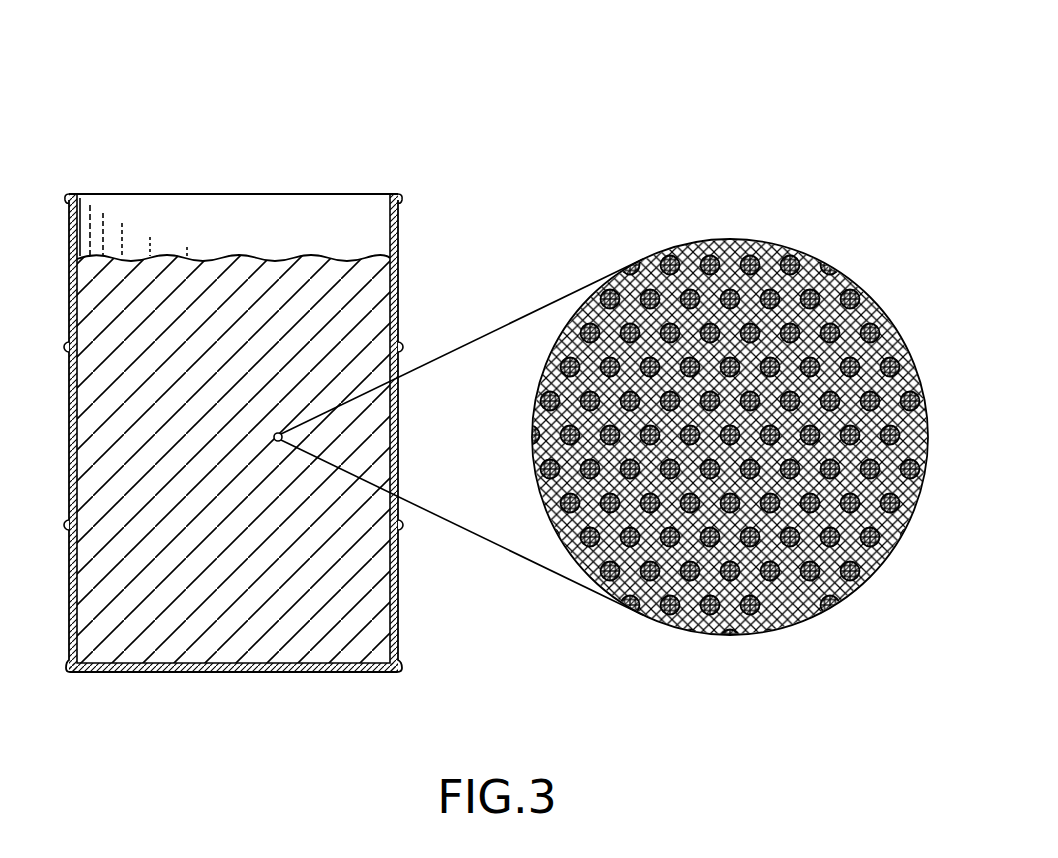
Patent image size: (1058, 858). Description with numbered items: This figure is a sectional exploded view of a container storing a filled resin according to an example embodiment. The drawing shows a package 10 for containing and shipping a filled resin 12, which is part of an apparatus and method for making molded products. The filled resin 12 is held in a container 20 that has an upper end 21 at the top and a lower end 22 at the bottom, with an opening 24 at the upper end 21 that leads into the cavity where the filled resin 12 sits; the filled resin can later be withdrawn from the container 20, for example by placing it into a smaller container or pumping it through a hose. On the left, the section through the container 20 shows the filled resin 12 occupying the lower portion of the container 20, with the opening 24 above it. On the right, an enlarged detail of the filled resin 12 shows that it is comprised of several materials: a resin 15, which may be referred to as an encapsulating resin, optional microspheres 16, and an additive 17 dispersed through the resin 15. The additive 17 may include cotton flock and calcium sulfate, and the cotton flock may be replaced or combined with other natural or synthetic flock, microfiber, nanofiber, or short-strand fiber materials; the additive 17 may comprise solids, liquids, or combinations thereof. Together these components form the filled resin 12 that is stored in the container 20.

The package 10 is at (96, 112).
The filled resin 12 is at (107, 593).
The resin 15 is at (555, 389).
The microspheres 16 is at (793, 605).
The additive 17 is at (873, 512).
The container 20 is at (398, 438).
The upper end 21 is at (168, 193).
The lower end 22 is at (280, 673).
The opening 24 is at (255, 215).